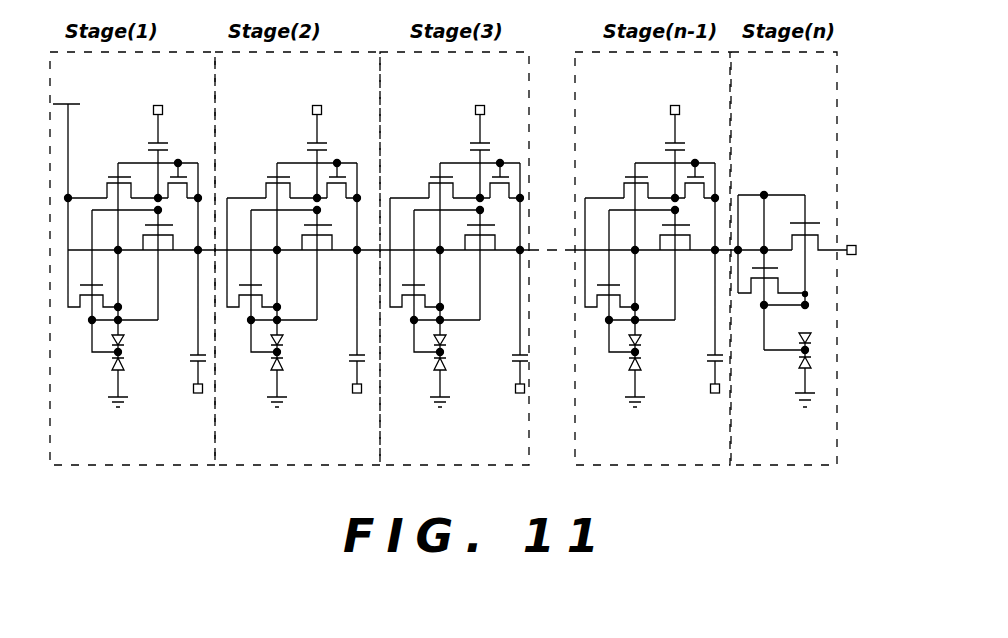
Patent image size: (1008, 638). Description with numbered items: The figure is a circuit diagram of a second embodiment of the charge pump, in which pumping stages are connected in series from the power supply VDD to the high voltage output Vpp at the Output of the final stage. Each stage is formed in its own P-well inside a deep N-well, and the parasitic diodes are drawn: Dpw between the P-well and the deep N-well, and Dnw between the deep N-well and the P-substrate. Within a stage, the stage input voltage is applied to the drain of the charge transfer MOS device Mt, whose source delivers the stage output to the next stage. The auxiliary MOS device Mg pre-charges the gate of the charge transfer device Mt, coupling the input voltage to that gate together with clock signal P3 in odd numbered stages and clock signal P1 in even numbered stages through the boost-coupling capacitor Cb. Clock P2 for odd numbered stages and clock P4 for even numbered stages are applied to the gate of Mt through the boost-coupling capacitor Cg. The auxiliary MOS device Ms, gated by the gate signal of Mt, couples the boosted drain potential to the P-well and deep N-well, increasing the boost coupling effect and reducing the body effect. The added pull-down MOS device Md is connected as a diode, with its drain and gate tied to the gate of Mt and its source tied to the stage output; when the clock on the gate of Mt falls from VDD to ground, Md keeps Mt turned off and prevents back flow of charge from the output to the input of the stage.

The power supply VDD is at (72, 141).
The clock signal P2 is at (321, 112).
The clock signal P4 is at (498, 112).
The clock signal P1 is at (537, 402).
The clock signal P3 is at (360, 402).
The boost-coupling capacitor Cg is at (399, 163).
The auxiliary MOS device Mg is at (366, 200).
The pull-down MOS device Md is at (420, 192).
The charge transfer MOS device Mt is at (487, 257).
The parasitic diode Dpw is at (461, 304).
The parasitic diode Dnw is at (441, 382).
The boost-coupling capacitor Cb is at (445, 367).
The auxiliary MOS device Ms is at (773, 272).
The high voltage output Vpp is at (859, 235).
The output Output is at (855, 264).